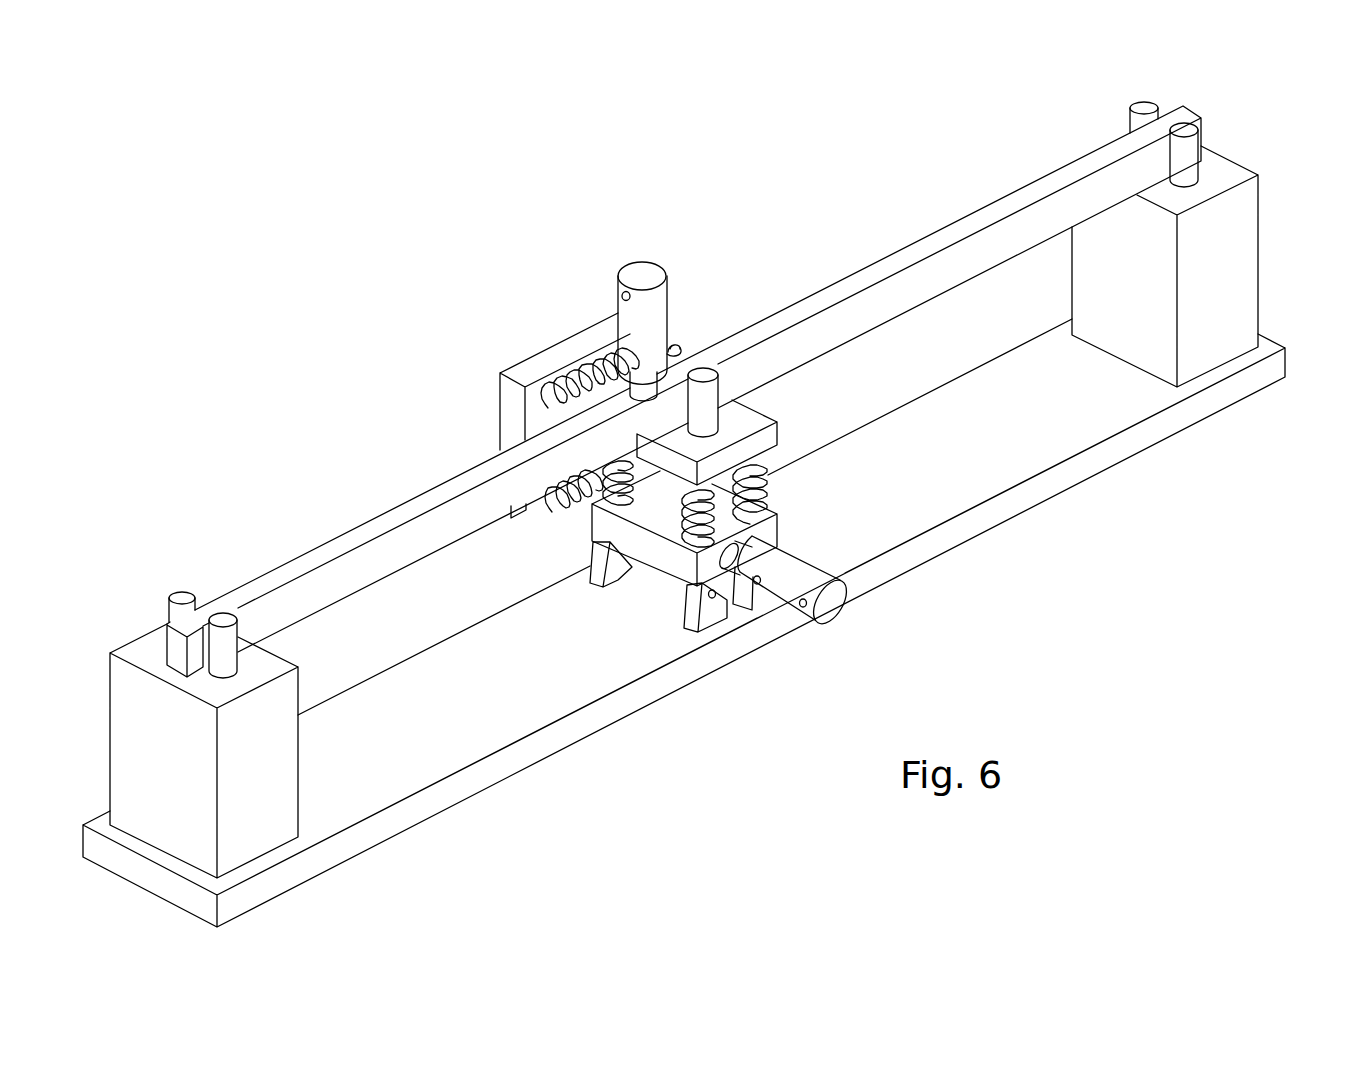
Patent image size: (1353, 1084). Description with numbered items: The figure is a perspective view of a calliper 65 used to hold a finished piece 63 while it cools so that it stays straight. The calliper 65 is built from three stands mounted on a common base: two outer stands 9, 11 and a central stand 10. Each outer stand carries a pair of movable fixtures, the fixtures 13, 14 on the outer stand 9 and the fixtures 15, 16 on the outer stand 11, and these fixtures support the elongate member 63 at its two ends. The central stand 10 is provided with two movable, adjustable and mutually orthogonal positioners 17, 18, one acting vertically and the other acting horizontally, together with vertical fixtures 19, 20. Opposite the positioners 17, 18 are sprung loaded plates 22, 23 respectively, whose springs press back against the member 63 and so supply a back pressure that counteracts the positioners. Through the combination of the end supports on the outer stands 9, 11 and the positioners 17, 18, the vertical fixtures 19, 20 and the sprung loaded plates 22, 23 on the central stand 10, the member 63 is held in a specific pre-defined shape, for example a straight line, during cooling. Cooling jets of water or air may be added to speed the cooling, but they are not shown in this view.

The outer stand 9 is at (248, 802).
The central stand 10 is at (662, 515).
The outer stand 11 is at (1213, 263).
The movable fixture 13 is at (185, 598).
The movable fixture 14 is at (225, 640).
The movable fixture 15 is at (1136, 110).
The movable fixture 16 is at (1190, 152).
The positioner 17 is at (626, 322).
The positioner 18 is at (790, 578).
The vertical fixture 19 is at (703, 412).
The vertical fixture 20 is at (672, 352).
The sprung loaded plate 22 is at (678, 566).
The sprung loaded plate 23 is at (745, 458).
The finished piece 63 is at (343, 543).
The calliper 65 is at (800, 196).